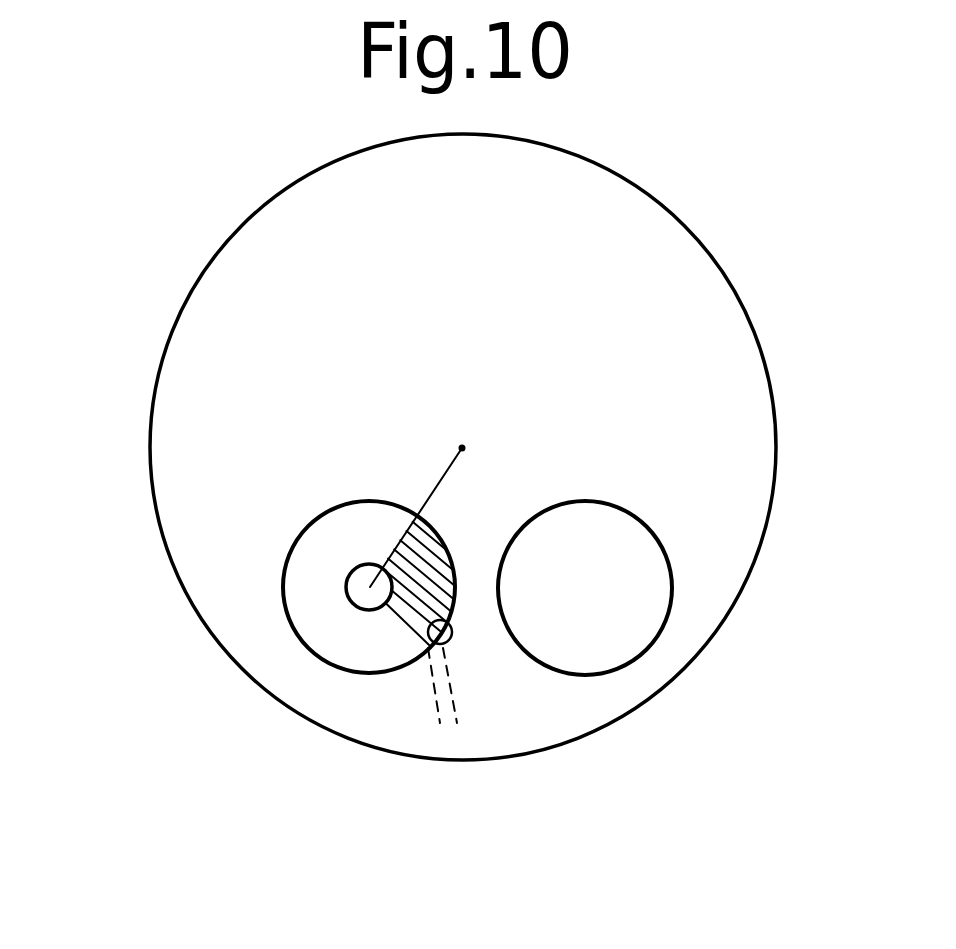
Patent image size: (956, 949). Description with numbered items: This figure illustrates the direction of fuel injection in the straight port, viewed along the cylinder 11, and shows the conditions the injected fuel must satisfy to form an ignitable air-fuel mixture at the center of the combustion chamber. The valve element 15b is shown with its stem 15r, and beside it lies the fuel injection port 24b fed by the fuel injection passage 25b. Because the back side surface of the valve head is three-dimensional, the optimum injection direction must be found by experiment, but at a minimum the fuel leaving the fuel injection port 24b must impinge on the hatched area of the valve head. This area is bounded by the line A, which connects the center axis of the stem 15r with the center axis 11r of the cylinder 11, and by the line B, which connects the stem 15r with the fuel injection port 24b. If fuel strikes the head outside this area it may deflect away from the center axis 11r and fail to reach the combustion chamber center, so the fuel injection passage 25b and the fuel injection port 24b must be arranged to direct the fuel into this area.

The cylinder 11 is at (735, 282).
The center axis of the cylinder 11r is at (462, 448).
The valve element 15b is at (305, 628).
The stem of the valve element 15r is at (350, 573).
The fuel injection port 24b is at (450, 626).
The fuel injection passage 25b is at (452, 702).
The line A is at (438, 478).
The line B is at (404, 622).